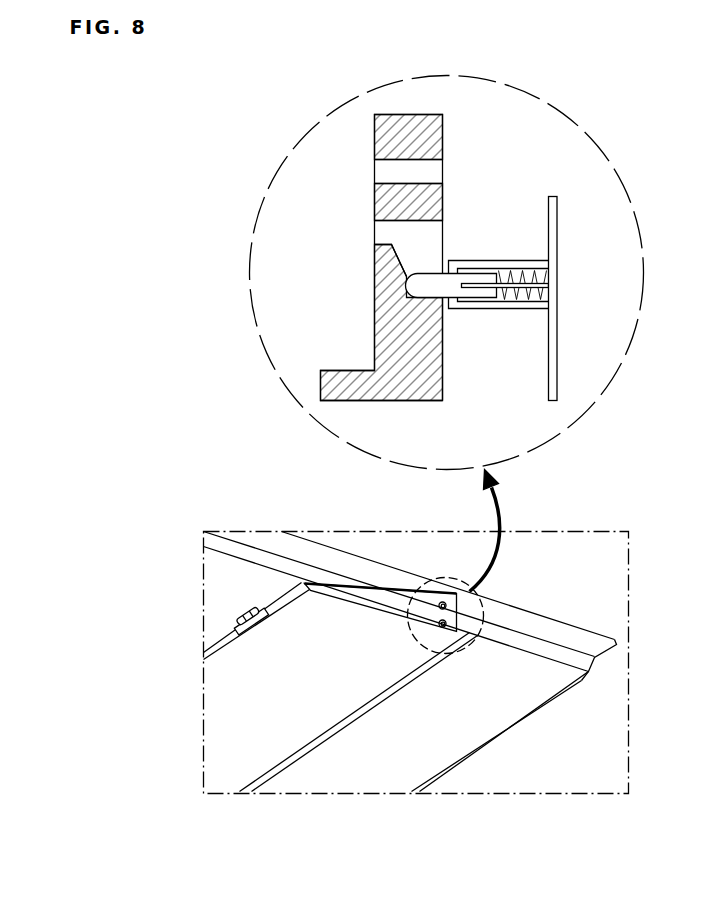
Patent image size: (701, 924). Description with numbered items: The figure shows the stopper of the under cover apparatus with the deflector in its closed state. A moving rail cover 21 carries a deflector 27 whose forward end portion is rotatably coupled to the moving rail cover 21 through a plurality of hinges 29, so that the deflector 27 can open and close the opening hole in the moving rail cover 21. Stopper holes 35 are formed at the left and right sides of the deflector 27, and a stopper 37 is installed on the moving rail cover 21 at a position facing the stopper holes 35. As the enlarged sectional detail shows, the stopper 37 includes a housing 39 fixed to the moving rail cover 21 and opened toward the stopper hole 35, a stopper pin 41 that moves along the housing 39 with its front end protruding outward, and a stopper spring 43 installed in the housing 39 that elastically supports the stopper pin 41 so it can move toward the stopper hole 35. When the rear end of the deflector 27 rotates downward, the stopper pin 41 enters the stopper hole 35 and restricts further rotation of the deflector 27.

The moving rail cover 21 is at (556, 240).
The deflector 27 is at (376, 327).
The hinge 29 is at (234, 619).
The stopper hole 35 is at (381, 171).
The stopper 37 is at (500, 236).
The housing 39 is at (482, 264).
The stopper pin 41 is at (414, 284).
The stopper spring 43 is at (518, 301).